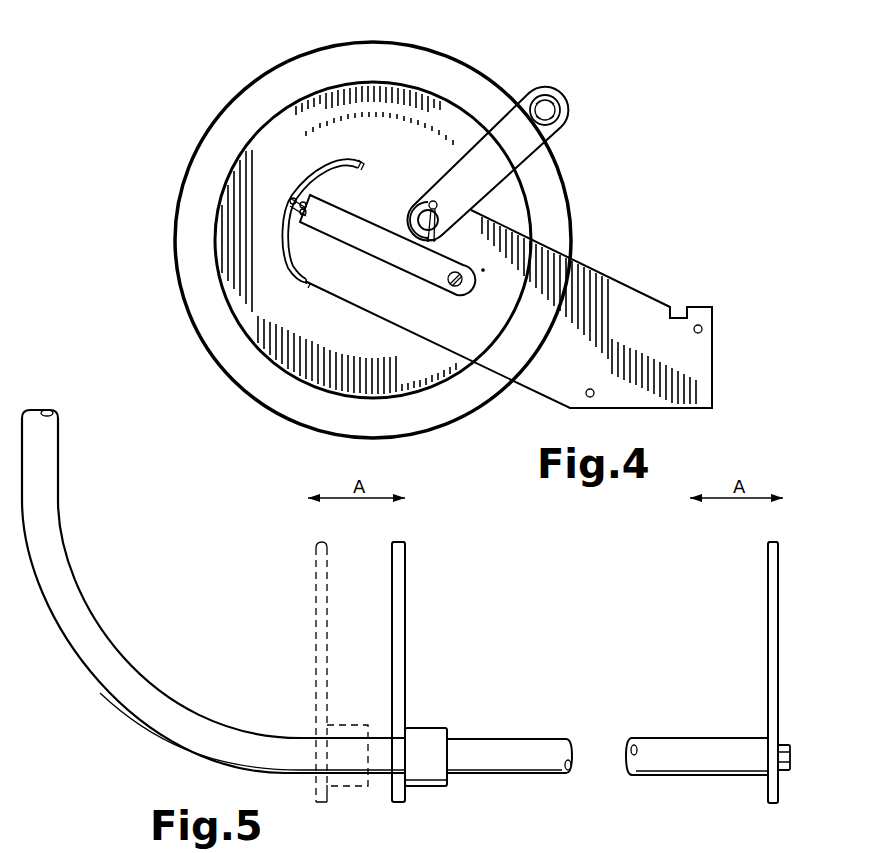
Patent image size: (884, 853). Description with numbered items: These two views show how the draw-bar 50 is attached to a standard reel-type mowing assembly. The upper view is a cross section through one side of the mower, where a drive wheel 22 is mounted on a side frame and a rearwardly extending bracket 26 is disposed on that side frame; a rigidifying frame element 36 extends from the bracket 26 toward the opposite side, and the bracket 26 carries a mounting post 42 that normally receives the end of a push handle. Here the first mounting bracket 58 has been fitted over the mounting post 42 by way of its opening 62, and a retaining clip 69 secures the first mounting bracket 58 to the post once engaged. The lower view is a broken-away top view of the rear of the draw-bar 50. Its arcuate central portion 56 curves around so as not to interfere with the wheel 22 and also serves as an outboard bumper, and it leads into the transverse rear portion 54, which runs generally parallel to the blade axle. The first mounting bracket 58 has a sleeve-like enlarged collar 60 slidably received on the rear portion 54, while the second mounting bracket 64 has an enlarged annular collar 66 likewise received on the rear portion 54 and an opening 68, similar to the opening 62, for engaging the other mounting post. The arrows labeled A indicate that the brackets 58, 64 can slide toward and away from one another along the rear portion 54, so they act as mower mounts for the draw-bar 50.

In FIG. 4, the drive wheel 22 is at (213, 143).
In FIG. 4, the bracket 26 is at (603, 297).
In FIG. 4, the rigidifying frame element 36 is at (292, 210).
In FIG. 4, the mounting post 42 is at (368, 158).
In FIG. 4, the rear portion 54 is at (563, 95).
In FIG. 5, the rear portion 54 is at (525, 762).
In FIG. 4, the first mounting bracket 58 is at (512, 146).
In FIG. 5, the first mounting bracket 58 is at (768, 675).
In FIG. 4, the retaining clip 69 is at (437, 204).
In FIG. 5, the arcuate central portion 56 is at (45, 480).
In FIG. 5, the draw-bar 50 is at (93, 567).
In FIG. 5, the second mounting bracket 64 is at (400, 641).
In FIG. 5, the opening 68 is at (405, 560).
In FIG. 5, the annular collar 66 is at (425, 740).
In FIG. 5, the opening 62 is at (768, 565).
In FIG. 5, the collar 60 is at (787, 770).